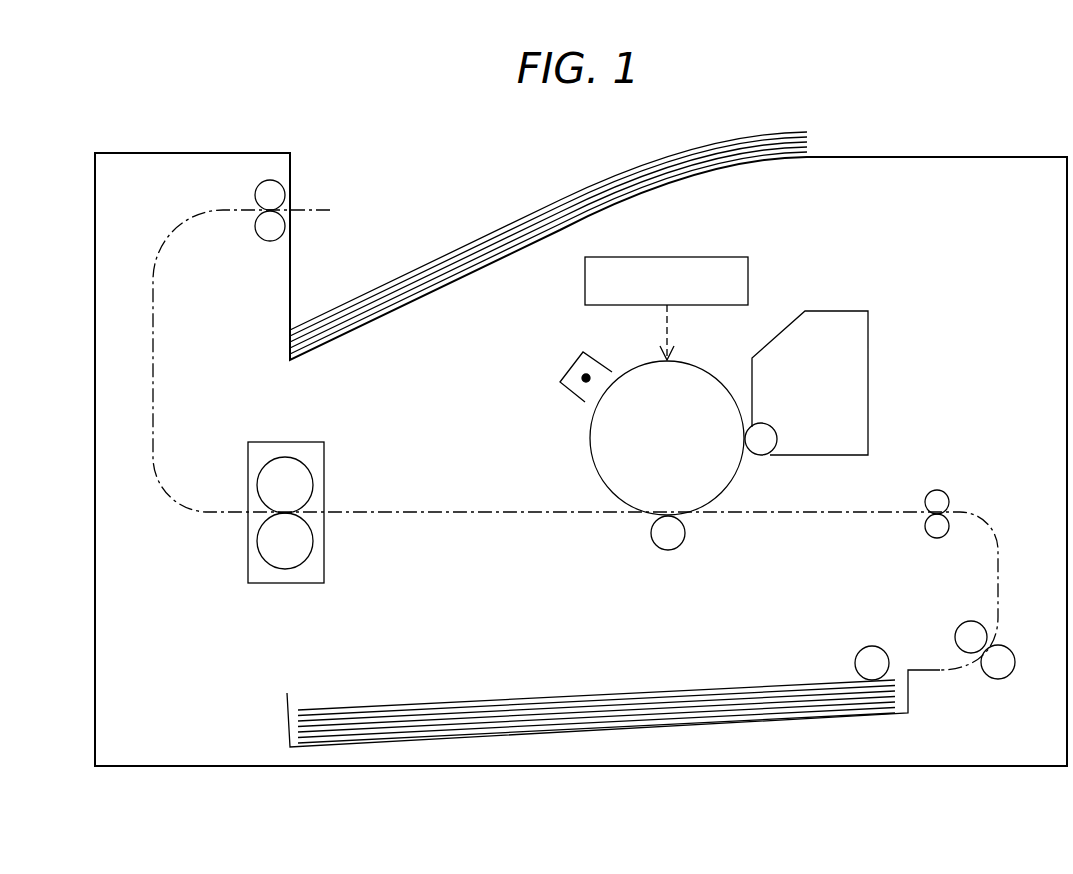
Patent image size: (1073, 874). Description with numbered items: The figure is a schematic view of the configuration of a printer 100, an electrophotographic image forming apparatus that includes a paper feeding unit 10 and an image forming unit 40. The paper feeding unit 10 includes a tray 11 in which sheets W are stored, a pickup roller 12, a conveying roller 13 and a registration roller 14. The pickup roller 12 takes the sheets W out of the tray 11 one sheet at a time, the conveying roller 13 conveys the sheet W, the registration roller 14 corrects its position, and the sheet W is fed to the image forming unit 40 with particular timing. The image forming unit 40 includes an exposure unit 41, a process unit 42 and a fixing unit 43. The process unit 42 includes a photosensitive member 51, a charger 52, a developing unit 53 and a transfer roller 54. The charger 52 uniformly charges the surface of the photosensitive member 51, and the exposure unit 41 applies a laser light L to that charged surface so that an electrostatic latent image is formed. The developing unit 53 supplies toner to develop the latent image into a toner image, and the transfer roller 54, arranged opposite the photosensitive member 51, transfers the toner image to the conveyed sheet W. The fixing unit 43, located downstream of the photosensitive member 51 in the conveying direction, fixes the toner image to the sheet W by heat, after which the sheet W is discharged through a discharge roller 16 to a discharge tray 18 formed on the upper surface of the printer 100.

The printer 100 is at (928, 121).
The image forming unit 40 is at (951, 228).
The paper feeding unit 10 is at (410, 692).
The sheet W is at (570, 712).
The tray 11 is at (660, 732).
The pickup roller 12 is at (855, 658).
The conveying roller 13 is at (998, 648).
The registration roller 14 is at (951, 526).
The discharge roller 16 is at (284, 185).
The discharge tray 18 is at (492, 233).
The exposure unit 41 is at (667, 265).
The process unit 42 is at (788, 300).
The fixing unit 43 is at (265, 442).
The photosensitive member 51 is at (720, 475).
The charger 52 is at (567, 372).
The developing unit 53 is at (857, 381).
The transfer roller 54 is at (684, 538).
The laser light L is at (673, 328).